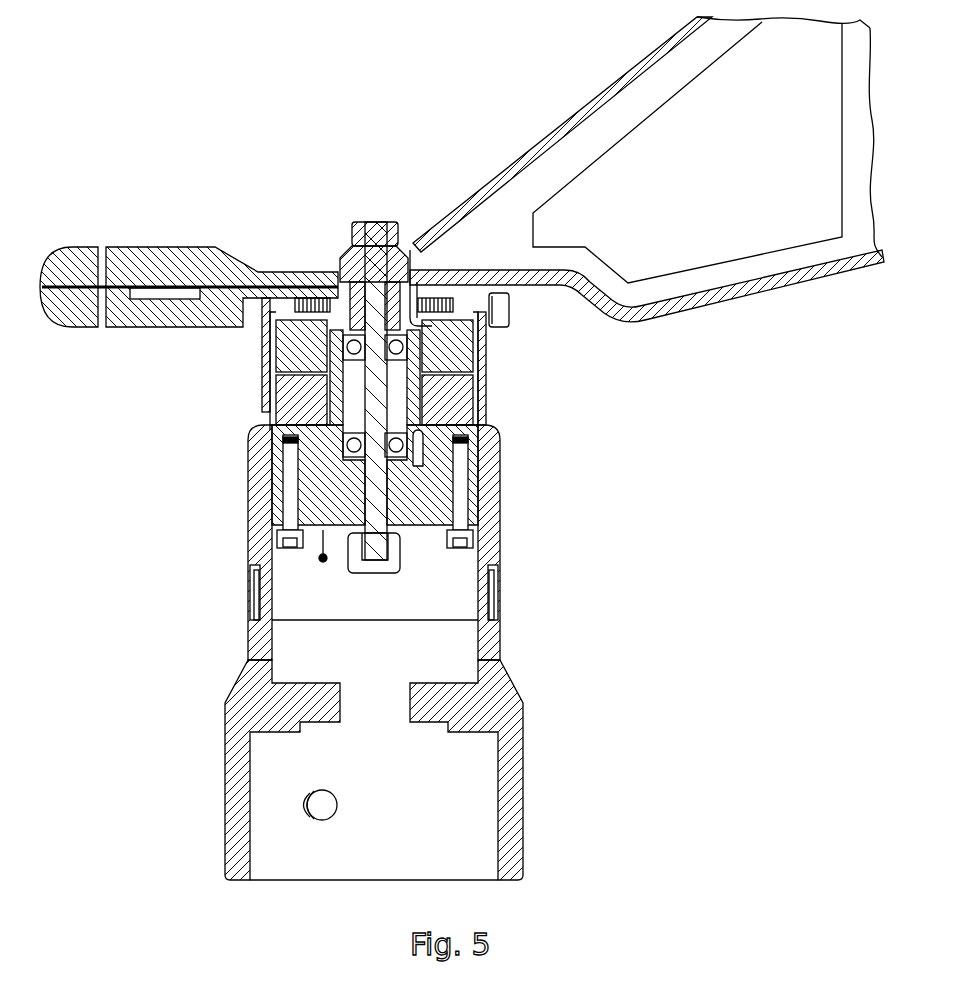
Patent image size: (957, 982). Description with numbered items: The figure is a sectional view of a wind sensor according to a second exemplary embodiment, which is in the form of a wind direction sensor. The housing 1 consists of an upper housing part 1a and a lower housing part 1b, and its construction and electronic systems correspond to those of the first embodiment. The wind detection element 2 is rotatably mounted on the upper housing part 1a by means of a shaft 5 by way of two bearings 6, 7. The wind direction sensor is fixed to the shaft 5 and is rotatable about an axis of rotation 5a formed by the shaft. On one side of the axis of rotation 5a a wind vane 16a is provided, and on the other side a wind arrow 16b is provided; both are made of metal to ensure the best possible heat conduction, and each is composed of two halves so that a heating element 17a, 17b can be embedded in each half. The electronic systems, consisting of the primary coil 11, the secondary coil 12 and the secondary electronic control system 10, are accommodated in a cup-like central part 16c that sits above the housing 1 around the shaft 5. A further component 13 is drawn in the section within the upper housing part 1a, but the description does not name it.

The housing 1 is at (520, 632).
The upper housing part 1a is at (255, 492).
The lower housing part 1b is at (240, 707).
The wind detection element 2 is at (440, 141).
The shaft 5 is at (377, 545).
The axis of rotation 5a is at (375, 236).
The bearing 6 is at (427, 466).
The bearing 7 is at (482, 372).
The secondary electronic control system 10 is at (505, 326).
The primary coil 11 is at (272, 420).
The secondary coil 12 is at (297, 360).
The rotor 13 is at (472, 518).
The wind vane 16a is at (758, 290).
The wind arrow 16b is at (127, 260).
The cup-like central part 16c is at (262, 335).
The heating element 17a is at (163, 280).
The heating element 17b is at (690, 160).